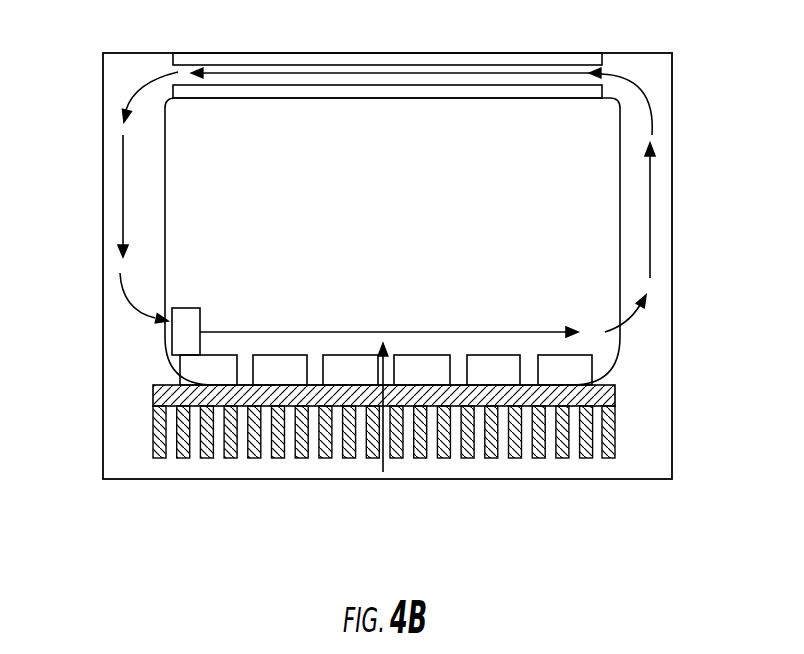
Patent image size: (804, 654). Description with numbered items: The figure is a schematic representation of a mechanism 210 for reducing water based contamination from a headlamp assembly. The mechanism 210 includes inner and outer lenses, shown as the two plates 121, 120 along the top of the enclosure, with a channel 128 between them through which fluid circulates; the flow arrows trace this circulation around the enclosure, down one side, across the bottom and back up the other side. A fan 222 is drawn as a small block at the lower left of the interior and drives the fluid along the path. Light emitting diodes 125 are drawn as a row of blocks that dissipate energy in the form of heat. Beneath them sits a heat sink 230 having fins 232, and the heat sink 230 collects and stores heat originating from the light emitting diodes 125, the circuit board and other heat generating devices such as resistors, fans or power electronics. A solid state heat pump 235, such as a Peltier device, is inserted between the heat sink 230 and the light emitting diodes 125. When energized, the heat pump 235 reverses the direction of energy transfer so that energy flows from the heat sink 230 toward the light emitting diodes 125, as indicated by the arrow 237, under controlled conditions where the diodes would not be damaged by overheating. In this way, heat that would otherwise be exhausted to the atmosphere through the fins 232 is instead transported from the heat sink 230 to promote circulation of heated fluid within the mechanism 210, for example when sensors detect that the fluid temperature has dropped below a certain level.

The mechanism 210 is at (88, 114).
The upper air duct plate 121 is at (273, 52).
The air mover / fan assembly 120 is at (312, 92).
The channel 128 is at (606, 67).
The fan 222 is at (183, 335).
The light emitting diodes 125 is at (568, 370).
The solid state heat pump 235 is at (613, 396).
The fins 232 is at (230, 458).
The heat sink 230 is at (391, 432).
The arrow 237 is at (385, 368).